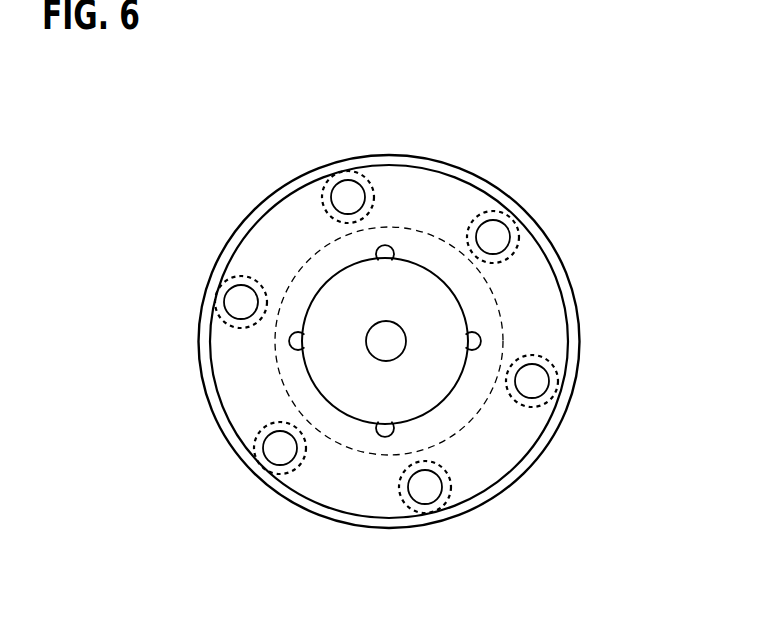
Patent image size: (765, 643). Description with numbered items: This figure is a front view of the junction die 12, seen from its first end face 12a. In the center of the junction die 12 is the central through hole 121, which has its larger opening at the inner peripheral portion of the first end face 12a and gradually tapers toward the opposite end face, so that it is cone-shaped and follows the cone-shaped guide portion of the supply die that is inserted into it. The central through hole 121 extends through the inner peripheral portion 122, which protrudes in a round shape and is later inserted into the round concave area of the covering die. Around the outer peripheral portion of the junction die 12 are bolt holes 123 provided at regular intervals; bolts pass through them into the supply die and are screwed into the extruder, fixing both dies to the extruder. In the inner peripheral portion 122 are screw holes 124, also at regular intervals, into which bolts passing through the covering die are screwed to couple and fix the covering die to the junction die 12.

The junction die 12 is at (411, 153).
The first end face 12a is at (275, 238).
The central through hole 121 is at (435, 308).
The inner peripheral portion 122 is at (478, 407).
The bolt holes 123 is at (347, 193).
The screw holes 124 is at (480, 338).